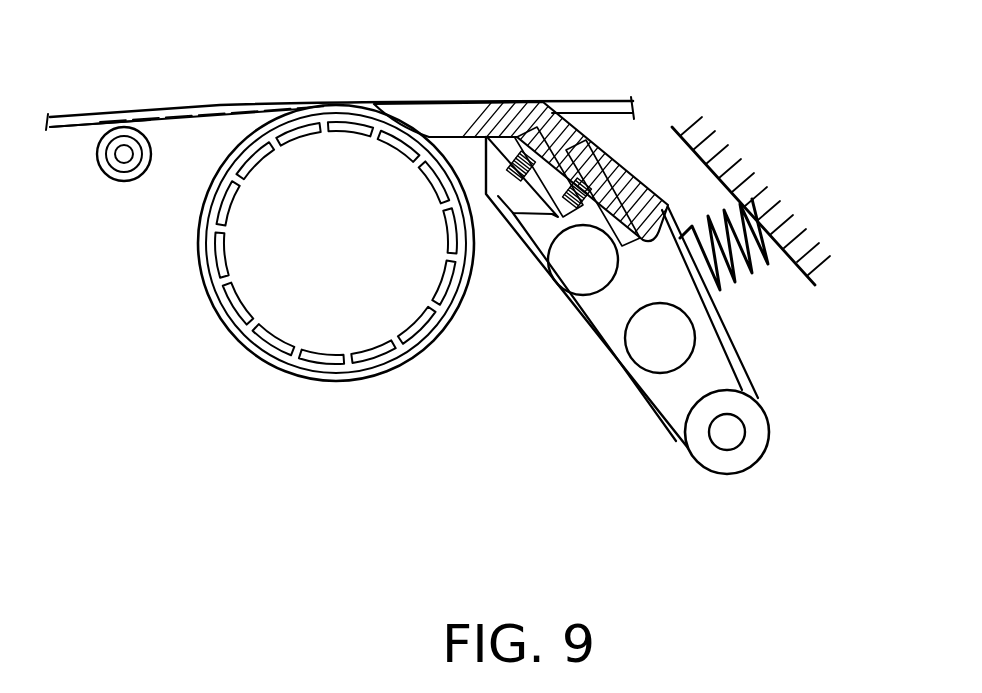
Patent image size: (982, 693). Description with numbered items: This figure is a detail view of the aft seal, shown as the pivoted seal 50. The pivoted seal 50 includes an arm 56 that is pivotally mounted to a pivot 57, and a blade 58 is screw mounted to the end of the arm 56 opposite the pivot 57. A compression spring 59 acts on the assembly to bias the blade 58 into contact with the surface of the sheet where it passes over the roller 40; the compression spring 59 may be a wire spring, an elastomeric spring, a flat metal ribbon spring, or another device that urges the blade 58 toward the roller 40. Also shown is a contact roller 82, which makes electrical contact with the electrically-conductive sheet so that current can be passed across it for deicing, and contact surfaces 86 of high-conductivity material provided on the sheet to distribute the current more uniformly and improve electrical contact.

The roller 40 is at (250, 347).
The pivoted seal 50 is at (777, 360).
The arm 56 is at (623, 393).
The pivot 57 is at (742, 443).
The blade 58 is at (437, 102).
The compression spring 59 is at (750, 277).
The contact roller 82 is at (123, 183).
The contact surface 86 is at (75, 128).